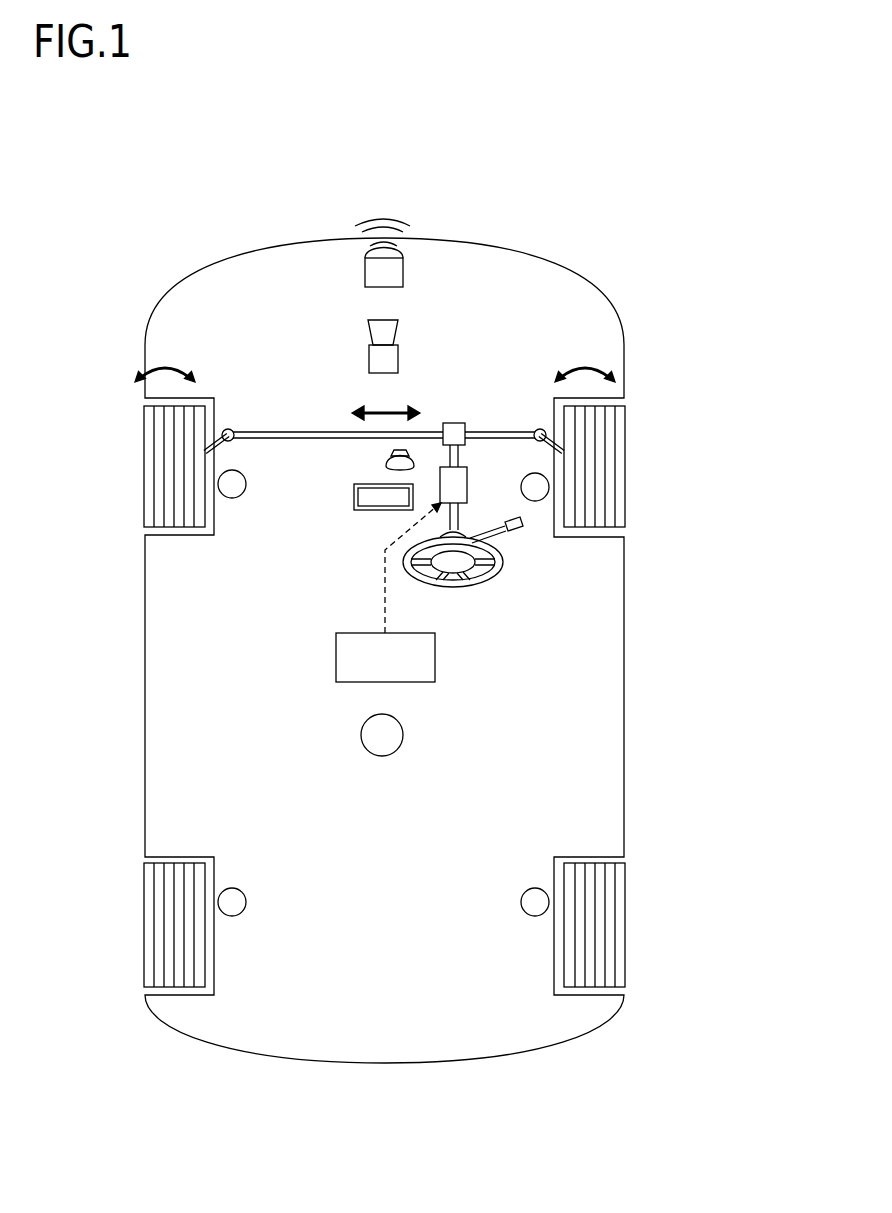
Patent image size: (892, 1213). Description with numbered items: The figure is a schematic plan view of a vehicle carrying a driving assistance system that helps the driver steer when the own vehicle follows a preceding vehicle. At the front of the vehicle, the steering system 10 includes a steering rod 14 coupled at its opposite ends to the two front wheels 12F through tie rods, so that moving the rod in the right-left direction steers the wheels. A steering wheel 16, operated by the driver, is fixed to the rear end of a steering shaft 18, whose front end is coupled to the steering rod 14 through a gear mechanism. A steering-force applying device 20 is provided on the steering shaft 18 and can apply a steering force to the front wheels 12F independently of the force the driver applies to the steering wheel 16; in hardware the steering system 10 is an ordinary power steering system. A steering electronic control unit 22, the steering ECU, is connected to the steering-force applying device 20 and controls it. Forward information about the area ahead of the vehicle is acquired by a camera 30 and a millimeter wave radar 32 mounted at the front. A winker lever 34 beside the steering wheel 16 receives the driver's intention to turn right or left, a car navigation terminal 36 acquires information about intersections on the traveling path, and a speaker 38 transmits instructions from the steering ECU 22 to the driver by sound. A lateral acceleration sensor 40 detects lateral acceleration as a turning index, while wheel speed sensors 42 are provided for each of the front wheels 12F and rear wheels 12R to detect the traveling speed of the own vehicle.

The steering system 10 is at (488, 372).
The front wheels 12F is at (145, 420).
The rear wheels 12R is at (145, 890).
The steering rod 14 is at (302, 432).
The steering wheel 16 is at (470, 587).
The steering shaft 18 is at (458, 457).
The steering-force applying device 20 is at (467, 486).
The steering electronic control unit 22 is at (420, 682).
The camera 30 is at (398, 362).
The radar 32 is at (403, 273).
The winker lever 34 is at (516, 530).
The car navigation terminal 36 is at (358, 500).
The speaker 38 is at (388, 462).
The lateral acceleration sensor 40 is at (402, 742).
The wheel speed sensors 42 is at (243, 497).